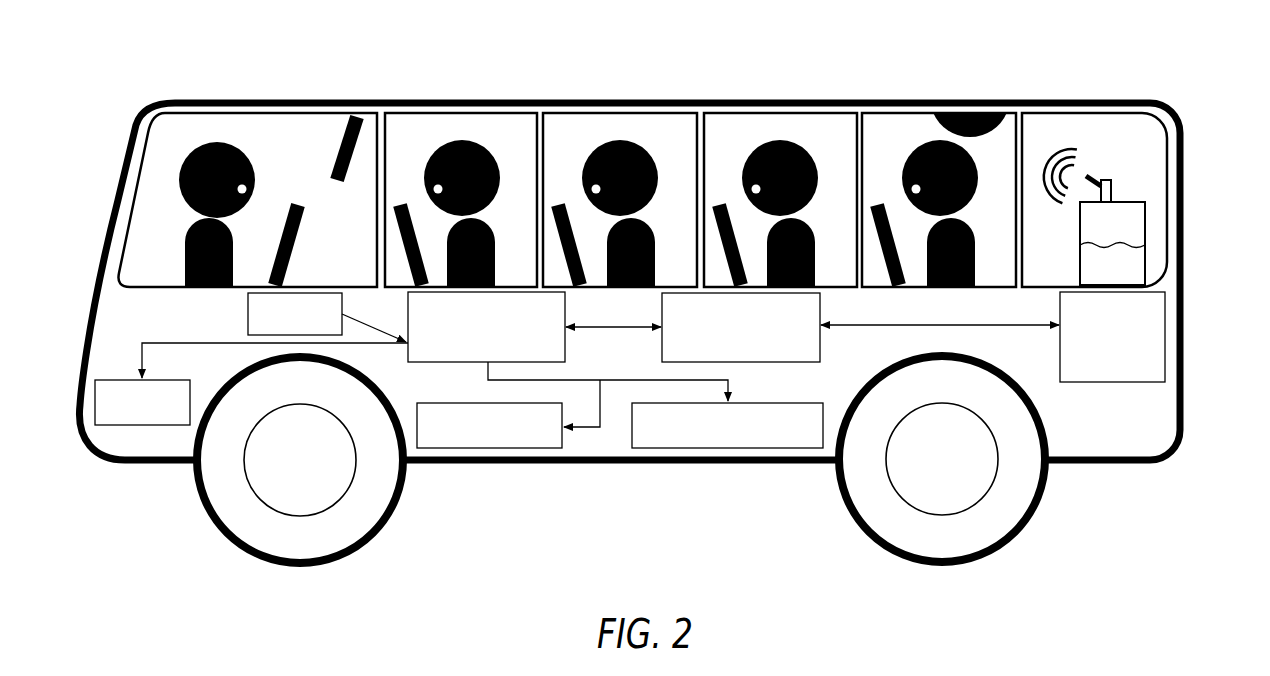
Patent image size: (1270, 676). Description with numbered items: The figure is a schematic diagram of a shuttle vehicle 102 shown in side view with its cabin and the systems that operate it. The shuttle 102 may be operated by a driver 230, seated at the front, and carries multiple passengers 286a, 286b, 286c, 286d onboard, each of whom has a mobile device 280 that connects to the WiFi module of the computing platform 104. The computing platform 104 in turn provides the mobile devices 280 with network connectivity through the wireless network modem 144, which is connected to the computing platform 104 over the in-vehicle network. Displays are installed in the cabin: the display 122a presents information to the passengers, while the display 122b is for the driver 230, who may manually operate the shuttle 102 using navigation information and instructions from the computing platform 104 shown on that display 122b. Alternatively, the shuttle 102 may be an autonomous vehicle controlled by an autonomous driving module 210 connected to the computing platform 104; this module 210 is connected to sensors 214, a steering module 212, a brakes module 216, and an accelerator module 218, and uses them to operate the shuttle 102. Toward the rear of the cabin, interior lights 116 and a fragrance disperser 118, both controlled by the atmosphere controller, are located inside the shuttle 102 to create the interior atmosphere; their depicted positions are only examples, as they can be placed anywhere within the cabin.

The shuttle vehicle 102 is at (1115, 465).
The computing platform 104 is at (820, 345).
The interior lights 116 is at (966, 112).
The fragrance disperser 118 is at (1147, 217).
The display 122a is at (343, 143).
The display 122b is at (296, 243).
The wireless network modem 144 is at (1167, 313).
The autonomous driving module 210 is at (565, 345).
The steering module 212 is at (110, 427).
The sensors 214 is at (247, 308).
The brakes module 216 is at (503, 448).
The accelerator module 218 is at (733, 448).
The driver 230 is at (198, 130).
The mobile device 280 is at (398, 203).
The passenger 286a is at (489, 151).
The passenger 286b is at (647, 151).
The passenger 286c is at (807, 151).
The passenger 286d is at (978, 177).